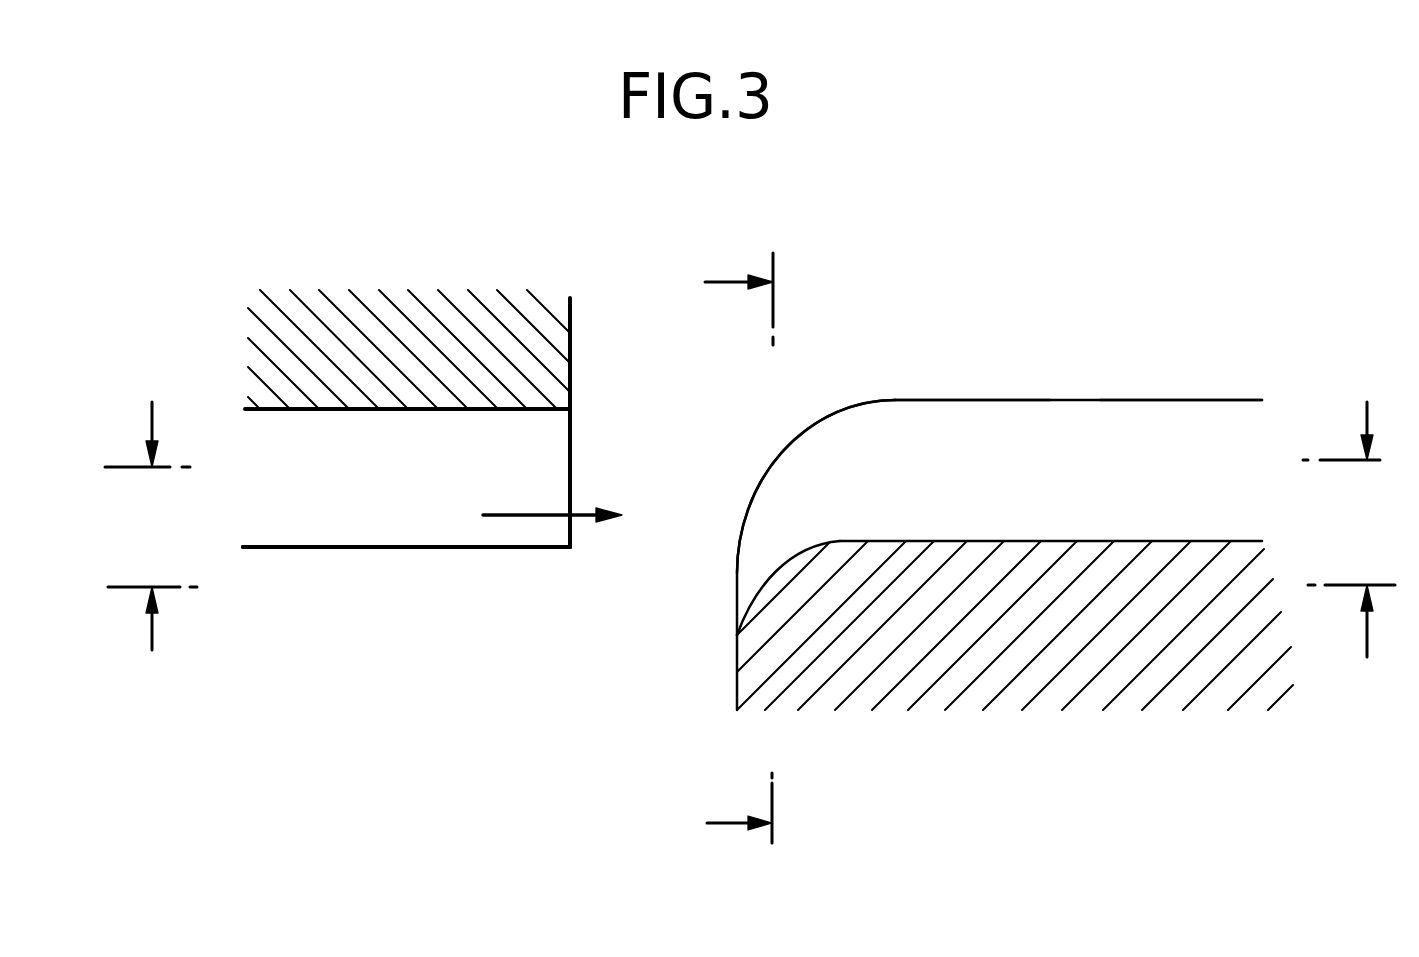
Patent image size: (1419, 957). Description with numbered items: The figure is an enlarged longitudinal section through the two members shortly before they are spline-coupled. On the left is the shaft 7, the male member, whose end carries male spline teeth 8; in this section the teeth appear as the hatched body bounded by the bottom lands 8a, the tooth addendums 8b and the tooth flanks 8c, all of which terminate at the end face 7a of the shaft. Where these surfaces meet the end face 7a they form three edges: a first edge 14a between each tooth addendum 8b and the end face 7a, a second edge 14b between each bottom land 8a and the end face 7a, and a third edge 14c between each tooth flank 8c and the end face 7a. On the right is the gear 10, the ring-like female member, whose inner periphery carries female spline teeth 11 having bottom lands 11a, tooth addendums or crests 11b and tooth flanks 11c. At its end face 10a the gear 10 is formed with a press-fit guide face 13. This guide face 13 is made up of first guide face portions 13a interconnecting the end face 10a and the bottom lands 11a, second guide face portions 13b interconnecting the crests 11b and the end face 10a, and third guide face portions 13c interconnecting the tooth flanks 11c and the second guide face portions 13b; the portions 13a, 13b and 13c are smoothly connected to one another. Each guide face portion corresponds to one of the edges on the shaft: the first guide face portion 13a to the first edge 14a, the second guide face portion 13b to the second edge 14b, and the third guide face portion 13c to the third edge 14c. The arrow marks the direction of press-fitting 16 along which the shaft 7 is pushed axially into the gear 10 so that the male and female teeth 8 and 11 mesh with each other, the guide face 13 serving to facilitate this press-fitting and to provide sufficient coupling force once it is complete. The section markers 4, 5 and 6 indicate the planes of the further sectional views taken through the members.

The section line 4- 4 is at (759, 433).
The section line 5- 5 is at (761, 633).
The section line 6- 6 is at (739, 556).
The shaft 7 is at (418, 322).
The end face of the shaft 7a is at (573, 332).
The male spline teeth 8 is at (386, 562).
The bottom lands of the male spline teeth 8a is at (394, 410).
The tooth addendums of the male spline teeth 8b is at (453, 548).
The tooth flanks of the male spline teeth 8c is at (273, 530).
The gear 10 is at (1095, 675).
The end face of the gear 10a is at (737, 687).
The female spline teeth 11 is at (1073, 378).
The bottom lands of the female spline teeth 11a is at (1003, 541).
The tooth addendums of the female spline teeth 11b is at (952, 400).
The tooth flanks of the female spline teeth 11c is at (1139, 437).
The press-fit guide face 13 is at (818, 408).
The first guide face portions 13a is at (760, 592).
The second guide face portions 13b is at (775, 462).
The third guide face portions 13c is at (770, 517).
The first edge 14a is at (570, 547).
The second edge 14b is at (572, 408).
The third edge 14c is at (571, 472).
The direction of press-fitting 16 is at (560, 510).